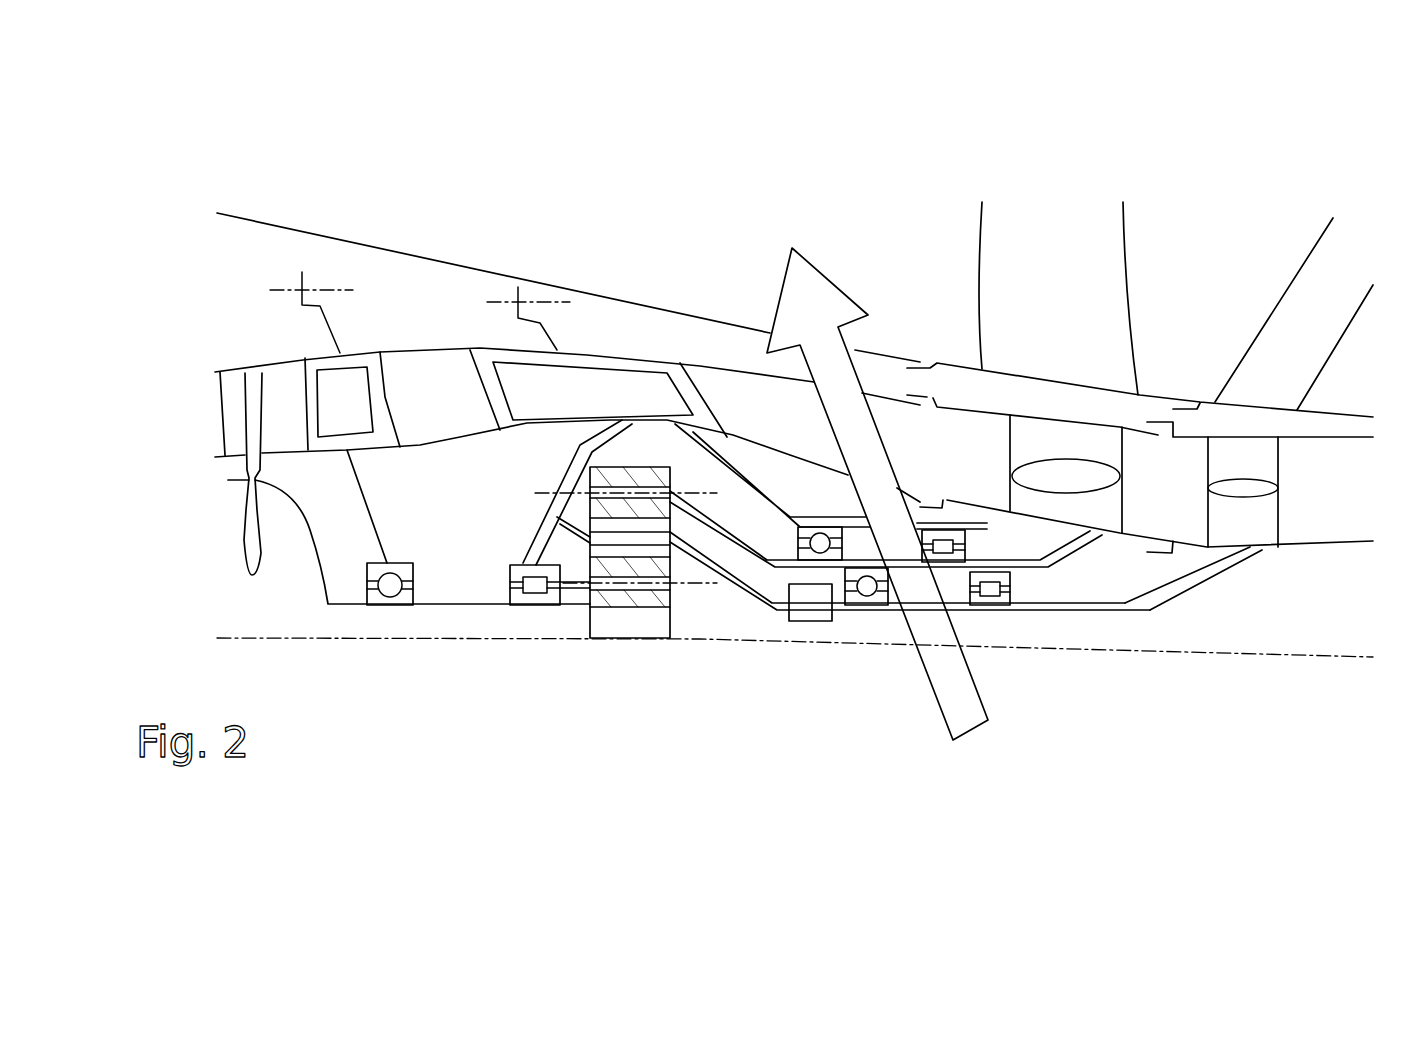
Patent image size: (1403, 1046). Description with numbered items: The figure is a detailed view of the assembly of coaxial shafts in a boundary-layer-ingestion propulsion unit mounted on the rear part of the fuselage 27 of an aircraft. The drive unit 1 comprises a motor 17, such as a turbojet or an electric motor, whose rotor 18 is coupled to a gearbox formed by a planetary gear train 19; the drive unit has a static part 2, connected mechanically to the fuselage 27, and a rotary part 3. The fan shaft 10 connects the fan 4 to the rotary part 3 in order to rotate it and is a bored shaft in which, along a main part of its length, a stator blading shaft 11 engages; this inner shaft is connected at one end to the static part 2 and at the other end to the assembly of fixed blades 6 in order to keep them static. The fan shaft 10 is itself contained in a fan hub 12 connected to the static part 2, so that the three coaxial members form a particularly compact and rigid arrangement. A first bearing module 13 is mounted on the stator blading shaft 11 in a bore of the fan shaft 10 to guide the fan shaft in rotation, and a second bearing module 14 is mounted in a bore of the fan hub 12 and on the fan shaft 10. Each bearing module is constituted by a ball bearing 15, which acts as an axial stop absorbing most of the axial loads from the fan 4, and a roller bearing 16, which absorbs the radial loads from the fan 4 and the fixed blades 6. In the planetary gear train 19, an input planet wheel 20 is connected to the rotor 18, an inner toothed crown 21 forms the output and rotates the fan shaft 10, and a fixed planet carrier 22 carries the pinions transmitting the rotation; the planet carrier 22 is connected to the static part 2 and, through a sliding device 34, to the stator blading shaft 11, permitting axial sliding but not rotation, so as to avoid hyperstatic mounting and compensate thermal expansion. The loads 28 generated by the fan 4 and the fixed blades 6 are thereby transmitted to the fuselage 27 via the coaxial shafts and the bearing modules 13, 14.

The drive unit 1 is at (218, 474).
The static part 2 is at (562, 481).
The rotary part 3 is at (305, 601).
The fan 4 is at (968, 204).
The assembly of fixed blades 6 is at (1297, 317).
The fan shaft 10 is at (1043, 555).
The stator blading shaft 11 is at (1120, 612).
The fan hub 12 is at (849, 524).
The first bearing module 13 is at (946, 610).
The second bearing module 14 is at (845, 516).
The ball bearing 15 is at (798, 540).
The roller bearing 16 is at (965, 543).
The motor 17 is at (236, 559).
The rotor 18 is at (364, 622).
The planetary gear train 19 is at (560, 543).
The input planet wheel 20 is at (640, 604).
The inner toothed crown 21 is at (643, 478).
The fixed planet carrier 22 is at (575, 517).
The fuselage 27 is at (222, 245).
The loads 28 is at (980, 694).
The sliding device 34 is at (810, 603).